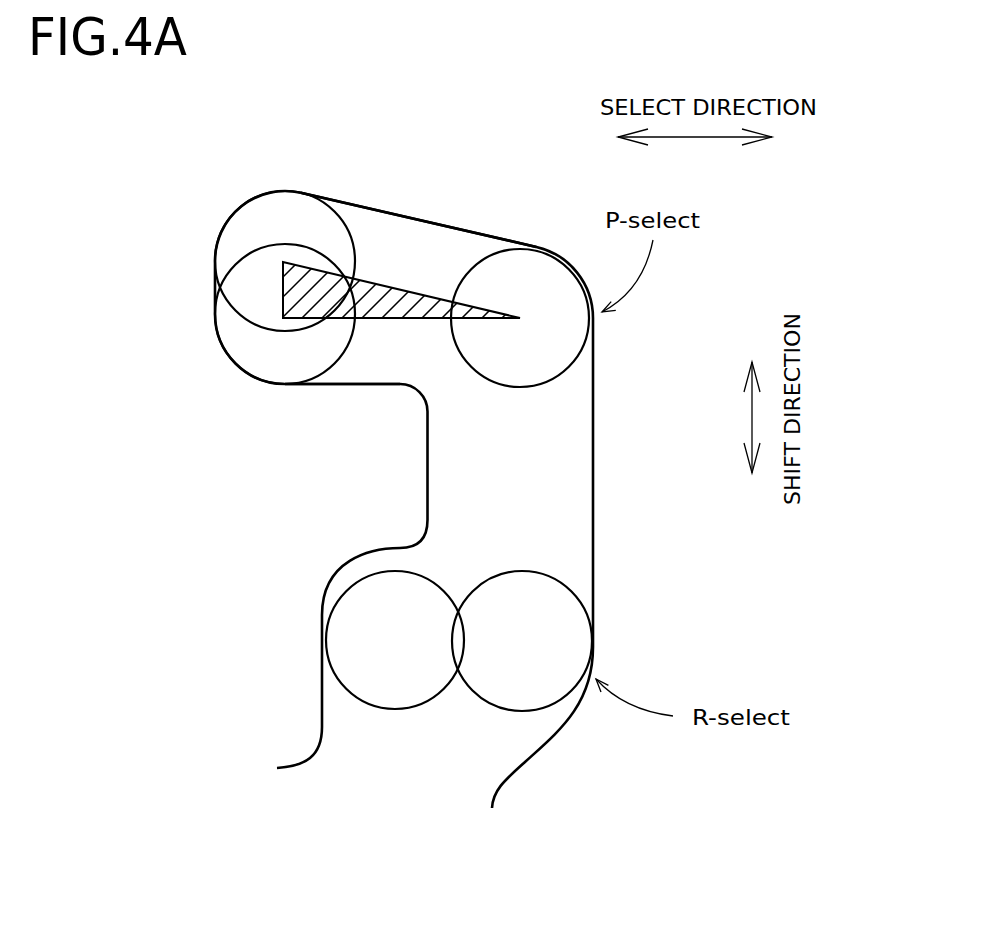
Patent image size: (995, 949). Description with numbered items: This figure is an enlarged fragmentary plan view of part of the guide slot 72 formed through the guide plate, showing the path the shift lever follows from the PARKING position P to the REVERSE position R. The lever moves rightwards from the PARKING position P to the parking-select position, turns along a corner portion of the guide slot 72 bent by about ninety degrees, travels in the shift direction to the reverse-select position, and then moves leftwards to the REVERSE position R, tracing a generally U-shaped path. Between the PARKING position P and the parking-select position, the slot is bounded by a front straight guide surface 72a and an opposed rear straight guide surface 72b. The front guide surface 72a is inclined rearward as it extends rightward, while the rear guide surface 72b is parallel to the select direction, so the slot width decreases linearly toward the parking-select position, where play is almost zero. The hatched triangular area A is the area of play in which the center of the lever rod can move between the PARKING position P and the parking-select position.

The guide slot 72 is at (598, 529).
The front straight guide surface 72a is at (447, 226).
The rear straight guide surface 72b is at (350, 385).
The triangular area A is at (370, 284).
The PARKING position P is at (202, 255).
The REVERSE position R is at (320, 598).